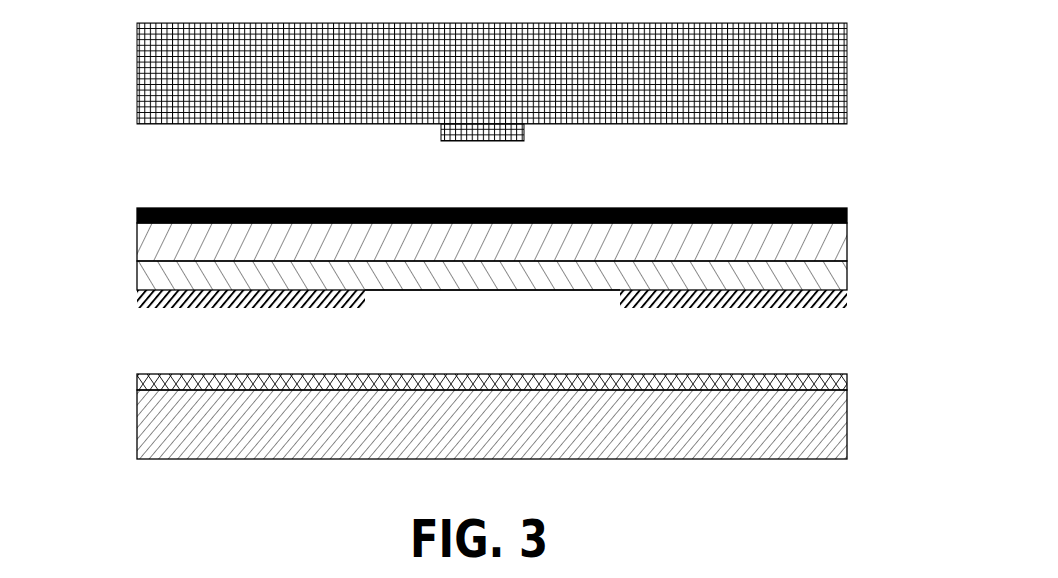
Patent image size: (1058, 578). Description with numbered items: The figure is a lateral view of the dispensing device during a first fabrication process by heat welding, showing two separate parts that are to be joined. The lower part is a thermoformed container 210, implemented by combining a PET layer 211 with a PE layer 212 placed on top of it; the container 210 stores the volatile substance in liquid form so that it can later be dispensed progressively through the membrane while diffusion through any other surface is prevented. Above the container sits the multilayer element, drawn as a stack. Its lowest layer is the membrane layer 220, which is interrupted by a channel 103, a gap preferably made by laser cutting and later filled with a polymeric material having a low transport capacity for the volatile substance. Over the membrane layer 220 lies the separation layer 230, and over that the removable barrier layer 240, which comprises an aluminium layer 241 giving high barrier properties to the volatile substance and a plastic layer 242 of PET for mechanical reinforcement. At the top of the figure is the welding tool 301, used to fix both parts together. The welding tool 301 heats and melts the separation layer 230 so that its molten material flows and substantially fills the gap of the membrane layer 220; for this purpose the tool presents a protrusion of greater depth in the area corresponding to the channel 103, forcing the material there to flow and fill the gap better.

The welding tool 301 is at (777, 75).
The removable barrier layer 240 is at (487, 240).
The plastic layer 242 is at (835, 213).
The aluminium layer 241 is at (832, 245).
The separation layer 230 is at (152, 275).
The membrane layer 220 is at (157, 307).
The channel 103 is at (485, 293).
The thermoformed container 210 is at (488, 403).
The PE layer 212 is at (827, 380).
The PET layer 211 is at (820, 430).